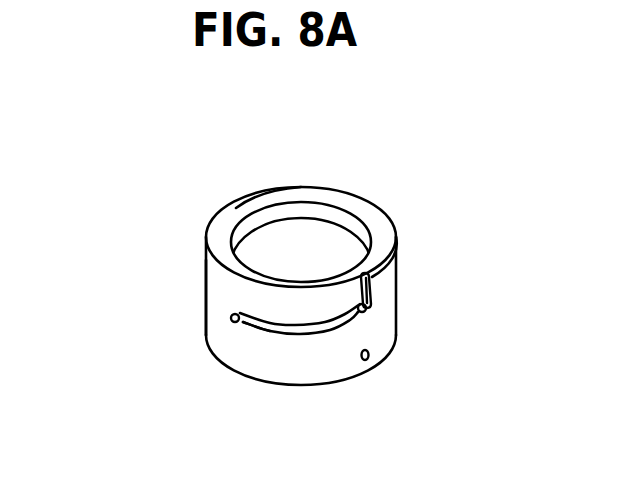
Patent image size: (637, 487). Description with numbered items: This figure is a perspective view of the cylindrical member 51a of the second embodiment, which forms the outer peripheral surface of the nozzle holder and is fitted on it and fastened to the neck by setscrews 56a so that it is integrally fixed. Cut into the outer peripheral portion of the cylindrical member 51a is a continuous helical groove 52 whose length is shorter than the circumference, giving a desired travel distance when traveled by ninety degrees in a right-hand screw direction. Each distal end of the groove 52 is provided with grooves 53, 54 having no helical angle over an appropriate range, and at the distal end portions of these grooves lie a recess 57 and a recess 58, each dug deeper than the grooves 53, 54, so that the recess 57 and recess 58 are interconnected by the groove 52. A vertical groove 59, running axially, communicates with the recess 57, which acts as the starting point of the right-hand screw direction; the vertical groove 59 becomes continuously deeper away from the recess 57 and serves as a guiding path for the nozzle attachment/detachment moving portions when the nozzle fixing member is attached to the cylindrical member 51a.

The cylindrical member 51a is at (136, 224).
The groove 52 is at (312, 332).
The groove 53 is at (372, 327).
The groove 54 is at (246, 325).
The setscrew 56a is at (371, 354).
The recess 57 is at (370, 297).
The recess 58 is at (234, 319).
The vertical groove 59 is at (236, 208).